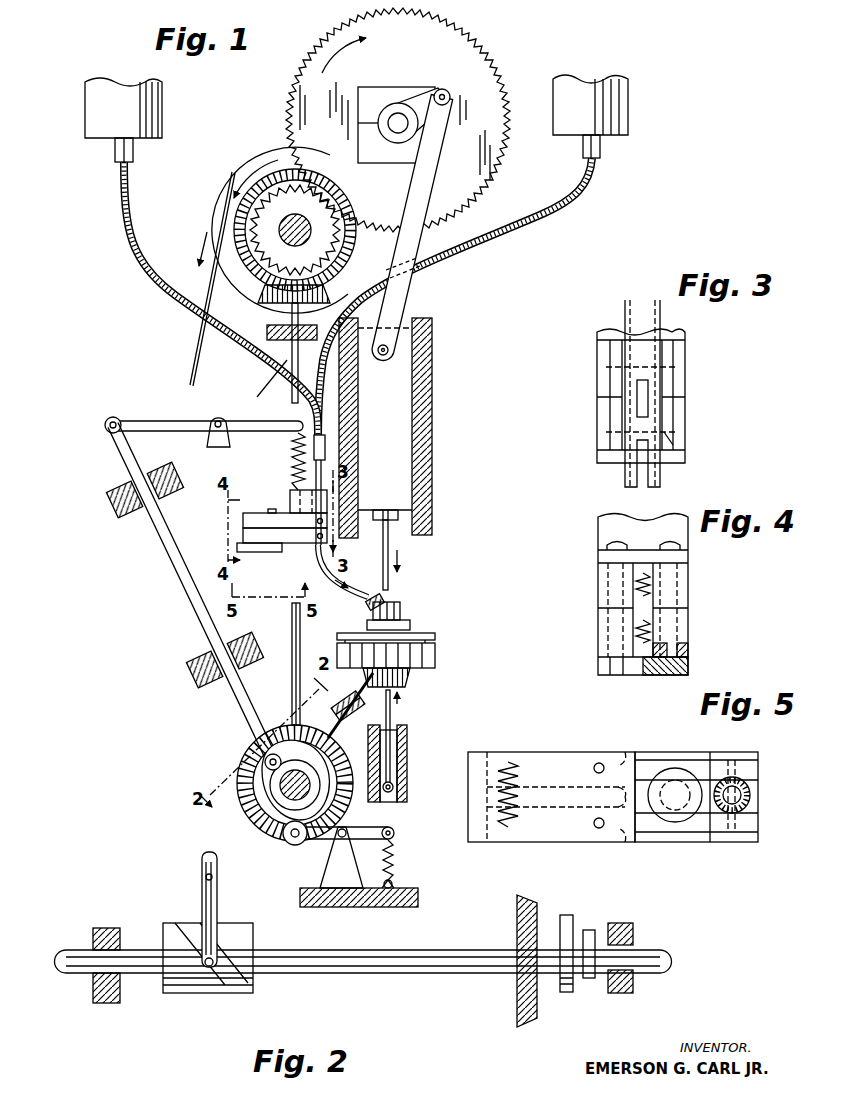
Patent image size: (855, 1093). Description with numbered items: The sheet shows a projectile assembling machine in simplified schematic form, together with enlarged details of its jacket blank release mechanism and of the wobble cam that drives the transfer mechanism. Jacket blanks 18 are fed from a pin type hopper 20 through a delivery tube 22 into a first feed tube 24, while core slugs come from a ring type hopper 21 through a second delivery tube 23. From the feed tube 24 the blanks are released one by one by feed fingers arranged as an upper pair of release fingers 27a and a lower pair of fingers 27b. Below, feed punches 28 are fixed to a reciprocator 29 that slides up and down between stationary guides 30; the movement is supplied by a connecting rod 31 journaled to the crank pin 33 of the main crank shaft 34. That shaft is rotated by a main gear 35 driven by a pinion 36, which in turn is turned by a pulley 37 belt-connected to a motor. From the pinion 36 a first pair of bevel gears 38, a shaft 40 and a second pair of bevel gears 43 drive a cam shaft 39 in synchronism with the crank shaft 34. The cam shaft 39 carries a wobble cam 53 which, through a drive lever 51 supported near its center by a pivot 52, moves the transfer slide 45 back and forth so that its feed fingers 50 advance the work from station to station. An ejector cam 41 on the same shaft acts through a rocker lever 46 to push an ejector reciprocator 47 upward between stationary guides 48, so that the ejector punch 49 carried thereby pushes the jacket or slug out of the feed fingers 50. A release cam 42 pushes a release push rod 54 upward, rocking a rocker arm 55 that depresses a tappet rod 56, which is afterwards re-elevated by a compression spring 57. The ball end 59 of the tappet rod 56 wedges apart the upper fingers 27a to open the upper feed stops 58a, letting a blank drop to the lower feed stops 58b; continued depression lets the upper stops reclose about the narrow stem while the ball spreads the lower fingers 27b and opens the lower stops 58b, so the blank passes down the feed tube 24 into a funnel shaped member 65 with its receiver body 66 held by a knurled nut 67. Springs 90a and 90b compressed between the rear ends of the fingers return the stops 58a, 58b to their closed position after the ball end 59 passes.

In FIG. 5, the jacket blank 18 is at (746, 789).
In FIG. 1, the pin type hopper 20 is at (95, 107).
In FIG. 1, the ring type hopper 21 is at (628, 113).
In FIG. 1, the delivery tube 22 is at (122, 226).
In FIG. 1, the second delivery tube 23 is at (580, 200).
In FIG. 1, the first feed tube 24 is at (325, 462).
In FIG. 3, the first feed tube 24 is at (625, 310).
In FIG. 5, the first feed tube 24 is at (746, 804).
In FIG. 1, the upper pair of release fingers 27a is at (243, 520).
In FIG. 3, the upper pair of release fingers 27a is at (680, 389).
In FIG. 4, the upper pair of release fingers 27a is at (688, 578).
In FIG. 1, the lower pair of fingers 27b is at (243, 535).
In FIG. 3, the lower pair of fingers 27b is at (680, 413).
In FIG. 4, the lower pair of fingers 27b is at (688, 638).
In FIG. 5, the lower pair of fingers 27b is at (703, 825).
In FIG. 1, the feed punch 28 is at (390, 580).
In FIG. 1, the reciprocator 29 is at (412, 480).
In FIG. 1, the stationary guides 30 is at (339, 370).
In FIG. 1, the connecting rod 31 is at (425, 240).
In FIG. 1, the crank pin 33 is at (448, 94).
In FIG. 1, the main crank shaft 34 is at (396, 108).
In FIG. 1, the main gear 35 is at (488, 61).
In FIG. 1, the pinion 36 is at (232, 222).
In FIG. 1, the pulley 37 is at (283, 148).
In FIG. 1, the first pair of bevel gears 38 is at (262, 286).
In FIG. 1, the cam shaft 39 is at (290, 804).
In FIG. 2, the cam shaft 39 is at (318, 975).
In FIG. 1, the shaft 40 is at (297, 400).
In FIG. 1, the ejector cam 41 is at (325, 811).
In FIG. 2, the ejector cam 41 is at (566, 992).
In FIG. 1, the release cam 42 is at (282, 792).
In FIG. 2, the release cam 42 is at (589, 978).
In FIG. 1, the second pair of bevel gears 43 is at (290, 736).
In FIG. 2, the second pair of bevel gears 43 is at (517, 990).
In FIG. 1, the transfer slide 45 is at (410, 675).
In FIG. 1, the rocker lever 46 is at (380, 838).
In FIG. 1, the ejector reciprocator 47 is at (397, 760).
In FIG. 1, the stationary guides 48 is at (369, 738).
In FIG. 1, the ejector punch 49 is at (395, 720).
In FIG. 1, the feed fingers 50 is at (435, 655).
In FIG. 1, the drive lever 51 is at (337, 730).
In FIG. 2, the drive lever 51 is at (217, 905).
In FIG. 1, the pivot 52 is at (348, 700).
In FIG. 2, the pivot 52 is at (212, 878).
In FIG. 2, the wobble cam 53 is at (215, 993).
In FIG. 1, the release push rod 54 is at (165, 545).
In FIG. 1, the rocker arm 55 is at (194, 425).
In FIG. 1, the tappet rod 56 is at (292, 450).
In FIG. 5, the tappet rod 56 is at (688, 780).
In FIG. 1, the compression spring 57 is at (292, 470).
In FIG. 1, the upper feed stops 58a is at (315, 527).
In FIG. 3, the upper feed stops 58a is at (673, 367).
In FIG. 1, the lower feed stops 58b is at (318, 540).
In FIG. 3, the lower feed stops 58b is at (673, 441).
In FIG. 5, the lower feed stops 58b is at (750, 796).
In FIG. 1, the ball end 59 is at (292, 500).
In FIG. 5, the ball end 59 is at (674, 823).
In FIG. 1, the funnel shaped member 65 is at (366, 604).
In FIG. 1, the receiver body 66 is at (400, 610).
In FIG. 1, the knurled nut 67 is at (410, 625).
In FIG. 4, the spring 90a is at (643, 570).
In FIG. 4, the spring 90b is at (645, 626).
In FIG. 5, the spring 90b is at (520, 826).